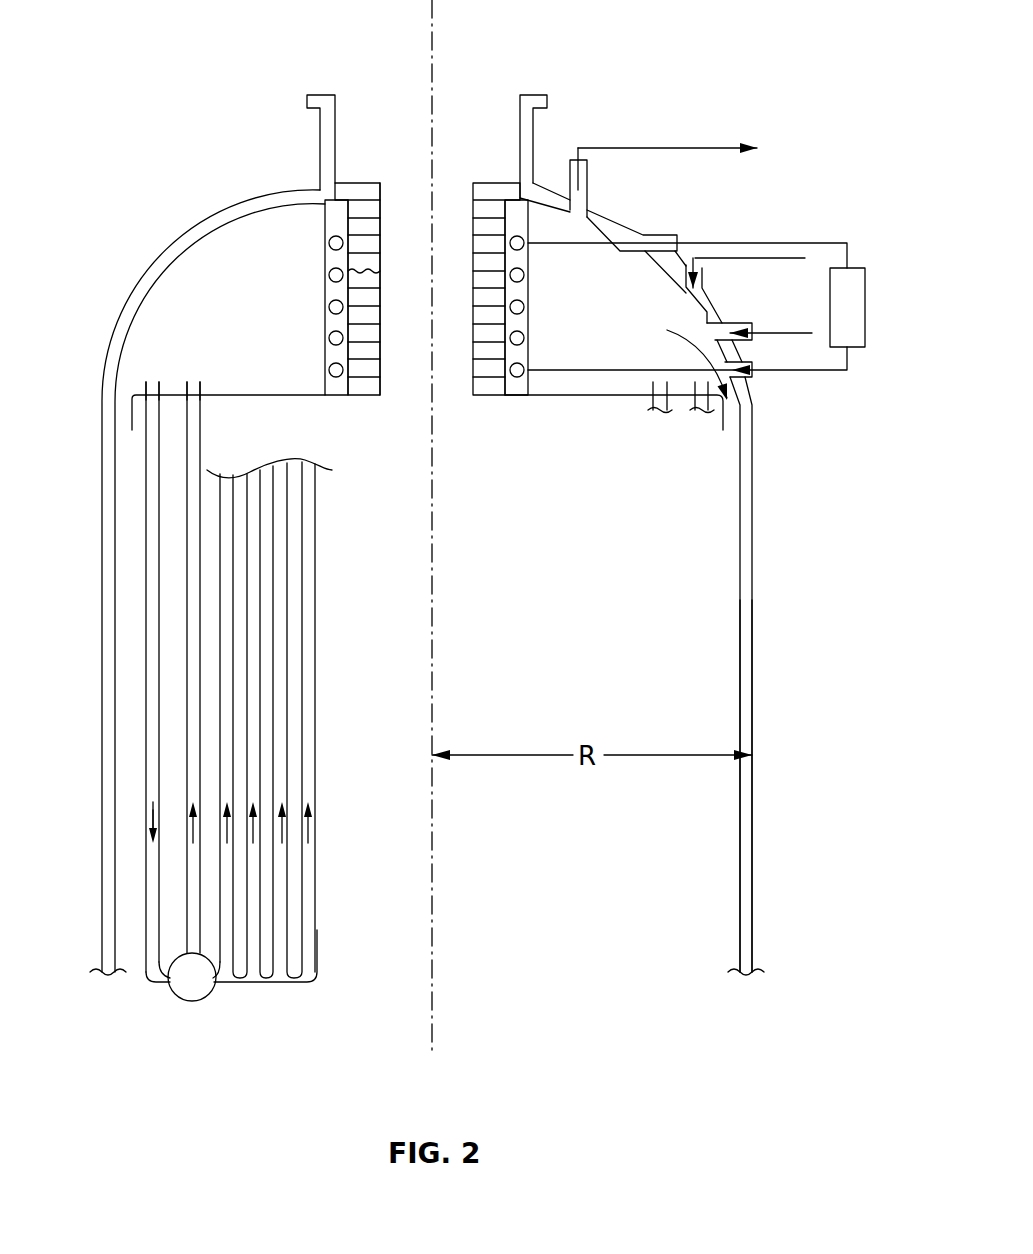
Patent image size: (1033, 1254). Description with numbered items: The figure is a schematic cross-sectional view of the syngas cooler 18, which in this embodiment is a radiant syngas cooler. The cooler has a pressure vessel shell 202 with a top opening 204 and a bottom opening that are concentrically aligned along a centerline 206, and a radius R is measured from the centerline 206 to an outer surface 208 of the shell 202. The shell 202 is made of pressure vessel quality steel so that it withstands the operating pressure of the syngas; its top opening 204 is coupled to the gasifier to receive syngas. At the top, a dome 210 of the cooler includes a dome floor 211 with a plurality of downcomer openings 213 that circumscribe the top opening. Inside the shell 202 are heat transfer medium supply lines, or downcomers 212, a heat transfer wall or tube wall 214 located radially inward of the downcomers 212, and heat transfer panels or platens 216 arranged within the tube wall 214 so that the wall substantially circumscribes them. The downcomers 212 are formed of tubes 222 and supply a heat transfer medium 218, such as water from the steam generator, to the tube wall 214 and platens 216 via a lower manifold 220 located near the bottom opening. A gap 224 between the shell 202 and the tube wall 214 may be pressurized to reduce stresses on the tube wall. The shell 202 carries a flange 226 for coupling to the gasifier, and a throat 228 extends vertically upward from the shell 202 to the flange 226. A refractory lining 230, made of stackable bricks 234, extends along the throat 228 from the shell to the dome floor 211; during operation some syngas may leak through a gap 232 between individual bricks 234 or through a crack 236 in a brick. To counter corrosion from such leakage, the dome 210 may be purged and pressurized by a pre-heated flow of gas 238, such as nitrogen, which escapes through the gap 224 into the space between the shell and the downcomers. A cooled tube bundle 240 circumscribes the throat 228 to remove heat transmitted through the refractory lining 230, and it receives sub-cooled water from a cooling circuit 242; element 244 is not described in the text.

The syngas cooler 18 is at (180, 90).
The pressure vessel shell 202 is at (677, 260).
The top opening 204 is at (475, 55).
The centerline 206 is at (432, 45).
The outer surface 208 is at (752, 715).
The dome 210 is at (660, 357).
The dome floor 211 is at (276, 393).
The heat transfer medium supply lines 212 is at (143, 457).
The downcomer openings 213 is at (165, 388).
The heat transfer wall 214 is at (185, 485).
The heat transfer panels 216 is at (208, 605).
The heat transfer medium 218 is at (152, 555).
The lower manifold 220 is at (242, 977).
The tubes 222 is at (143, 740).
The gap 224 is at (128, 422).
The flange 226 is at (547, 100).
The throat 228 is at (534, 137).
The refractory lining 230 is at (358, 183).
The gap 232 is at (380, 253).
The bricks 234 is at (345, 231).
The crack 236 is at (383, 278).
The flow of gas 238 is at (772, 330).
The cooled tube bundle 240 is at (524, 243).
The cooling circuit 242 is at (512, 276).
The baffle plate 244 is at (337, 397).